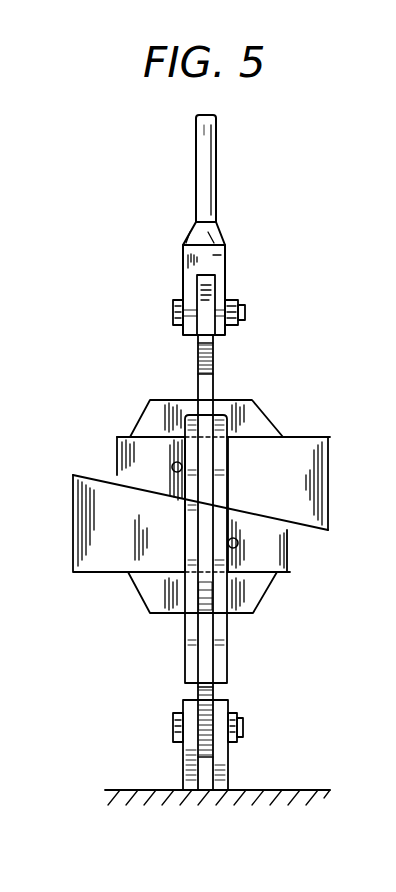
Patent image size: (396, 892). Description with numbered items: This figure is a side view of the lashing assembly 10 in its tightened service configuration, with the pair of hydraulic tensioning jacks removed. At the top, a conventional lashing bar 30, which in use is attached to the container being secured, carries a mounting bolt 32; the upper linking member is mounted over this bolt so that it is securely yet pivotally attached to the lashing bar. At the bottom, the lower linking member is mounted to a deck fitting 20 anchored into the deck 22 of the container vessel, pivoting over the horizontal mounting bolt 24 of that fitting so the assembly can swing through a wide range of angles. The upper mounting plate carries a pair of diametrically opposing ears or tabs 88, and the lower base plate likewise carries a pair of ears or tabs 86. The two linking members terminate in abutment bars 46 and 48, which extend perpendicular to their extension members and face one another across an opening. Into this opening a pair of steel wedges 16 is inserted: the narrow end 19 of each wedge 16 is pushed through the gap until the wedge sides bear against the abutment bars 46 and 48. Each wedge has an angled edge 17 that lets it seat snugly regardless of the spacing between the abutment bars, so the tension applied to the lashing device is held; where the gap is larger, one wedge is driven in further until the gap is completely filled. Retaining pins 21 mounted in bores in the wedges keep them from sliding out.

The lashing assembly 10 is at (243, 233).
The lashing bar 30 is at (196, 165).
The mounting bolt 32 is at (245, 312).
The ears or tabs 86 is at (198, 365).
The abutment bar 46 is at (258, 412).
The abutment bar 48 is at (150, 595).
The steel wedge 16 is at (78, 522).
The angled edge 17 is at (88, 475).
The narrow end 19 is at (117, 450).
The retaining pins 21 is at (174, 463).
The ears or tabs 88 is at (200, 688).
The horizontal mounting bolt 24 is at (243, 728).
The deck fitting 20 is at (228, 768).
The deck 22 is at (130, 790).